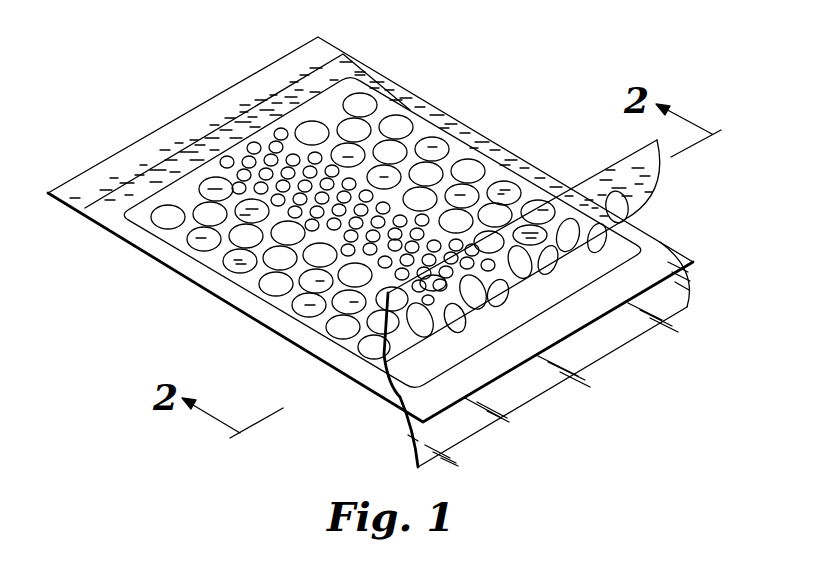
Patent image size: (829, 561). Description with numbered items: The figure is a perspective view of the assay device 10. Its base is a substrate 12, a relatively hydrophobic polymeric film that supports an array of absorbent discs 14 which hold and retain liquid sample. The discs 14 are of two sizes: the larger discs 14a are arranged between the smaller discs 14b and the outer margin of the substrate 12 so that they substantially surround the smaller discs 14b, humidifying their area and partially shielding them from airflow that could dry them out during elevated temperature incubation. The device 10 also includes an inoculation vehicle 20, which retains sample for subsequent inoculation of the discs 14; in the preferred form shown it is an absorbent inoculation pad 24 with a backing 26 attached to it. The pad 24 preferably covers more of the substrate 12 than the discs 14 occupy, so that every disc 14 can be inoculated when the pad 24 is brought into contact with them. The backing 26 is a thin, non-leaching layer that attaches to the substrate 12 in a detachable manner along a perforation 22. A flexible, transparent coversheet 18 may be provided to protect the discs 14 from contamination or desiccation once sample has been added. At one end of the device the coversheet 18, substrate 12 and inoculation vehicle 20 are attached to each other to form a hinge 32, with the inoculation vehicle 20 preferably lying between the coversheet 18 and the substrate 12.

The assay device 10 is at (452, 55).
The substrate 12 is at (650, 198).
The absorbent discs 14 is at (287, 313).
The larger discs 14a is at (242, 265).
The smaller discs 14b is at (241, 160).
The coversheet 18 is at (477, 423).
The inoculation vehicle 20 is at (523, 358).
The perforation 22 is at (165, 168).
The absorbent inoculation pad 24 is at (415, 388).
The backing 26 is at (643, 281).
The hinge 32 is at (103, 192).